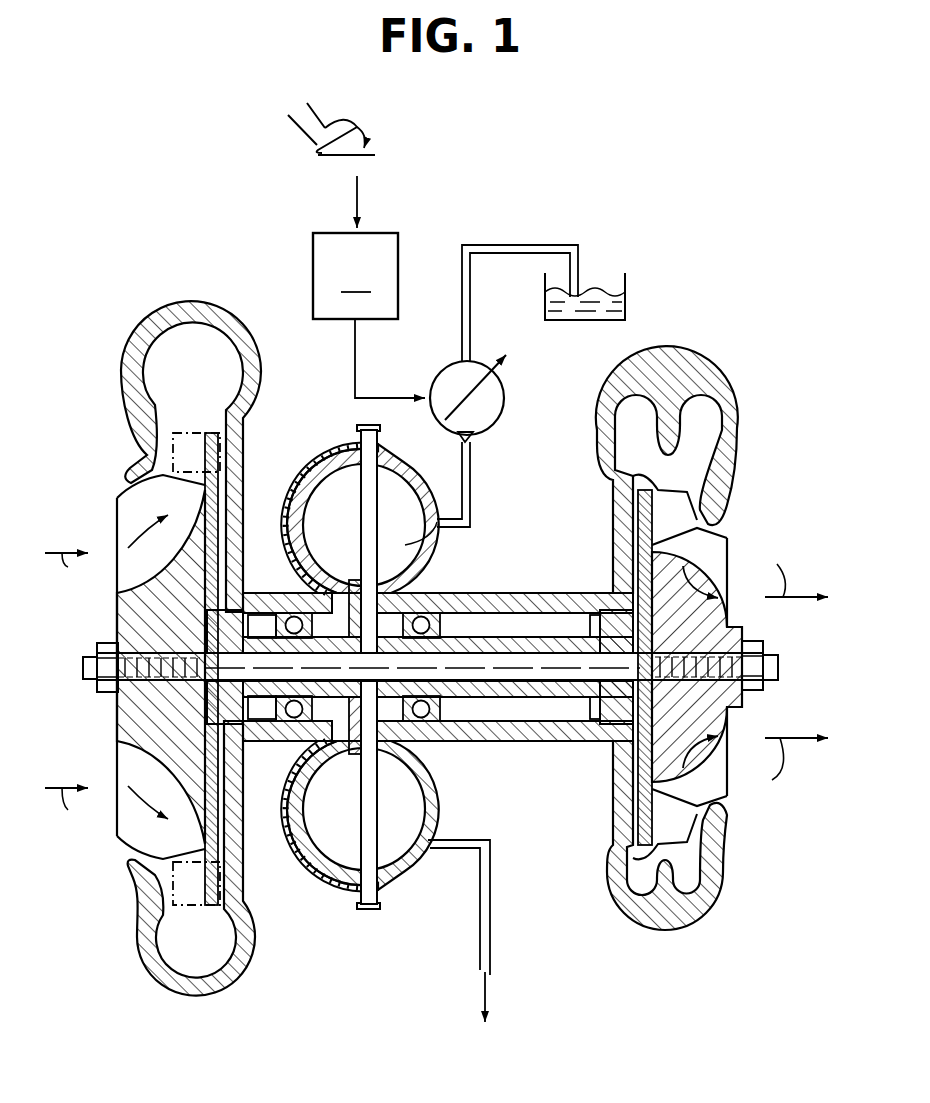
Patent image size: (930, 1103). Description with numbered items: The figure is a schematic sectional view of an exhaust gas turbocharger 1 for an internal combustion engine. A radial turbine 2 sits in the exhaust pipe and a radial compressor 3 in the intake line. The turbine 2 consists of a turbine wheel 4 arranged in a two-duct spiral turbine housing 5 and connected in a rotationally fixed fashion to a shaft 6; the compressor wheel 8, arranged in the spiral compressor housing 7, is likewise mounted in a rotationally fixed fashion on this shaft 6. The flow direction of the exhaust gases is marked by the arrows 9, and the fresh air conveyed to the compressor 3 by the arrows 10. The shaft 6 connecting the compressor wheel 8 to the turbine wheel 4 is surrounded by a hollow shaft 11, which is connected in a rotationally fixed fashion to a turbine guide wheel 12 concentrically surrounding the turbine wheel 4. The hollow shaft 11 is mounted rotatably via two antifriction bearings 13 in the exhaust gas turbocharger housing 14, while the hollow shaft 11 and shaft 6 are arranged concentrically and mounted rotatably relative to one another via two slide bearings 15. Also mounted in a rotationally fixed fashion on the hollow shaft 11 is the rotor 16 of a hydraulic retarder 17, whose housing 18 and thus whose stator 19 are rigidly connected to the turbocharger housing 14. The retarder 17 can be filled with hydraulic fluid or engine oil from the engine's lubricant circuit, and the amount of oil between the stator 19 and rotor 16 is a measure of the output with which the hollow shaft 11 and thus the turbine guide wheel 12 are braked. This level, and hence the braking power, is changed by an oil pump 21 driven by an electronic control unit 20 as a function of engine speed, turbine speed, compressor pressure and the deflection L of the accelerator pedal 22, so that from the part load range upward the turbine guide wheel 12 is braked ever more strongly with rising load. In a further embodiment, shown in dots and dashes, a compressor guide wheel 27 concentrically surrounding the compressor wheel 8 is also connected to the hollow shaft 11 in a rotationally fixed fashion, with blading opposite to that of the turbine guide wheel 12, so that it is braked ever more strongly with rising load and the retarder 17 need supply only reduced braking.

The exhaust gas turbocharger 1 is at (437, 950).
The turbine 2 is at (738, 495).
The compressor 3 is at (108, 412).
The turbine wheel 4 is at (724, 667).
The turbine housing 5 is at (688, 365).
The shaft 6 is at (565, 672).
The compressor housing 7 is at (186, 304).
The compressor wheel 8 is at (147, 745).
The arrows 9 is at (705, 576).
The arrows 10 is at (130, 545).
The hollow shaft 11 is at (500, 740).
The turbine guide wheel 12 is at (660, 495).
The antifriction bearings 13 is at (290, 725).
The exhaust gas turbocharger housing 14 is at (515, 596).
The slide bearings 15 is at (258, 635).
The rotor 16 is at (338, 480).
The hydraulic retarder 17 is at (354, 420).
The housing 18 is at (288, 477).
The stator 19 is at (402, 543).
The electronic control unit 20 is at (369, 283).
The oil pump 21 is at (494, 402).
The accelerator pedal 22 is at (337, 158).
The compressor guide wheel 27 is at (193, 885).